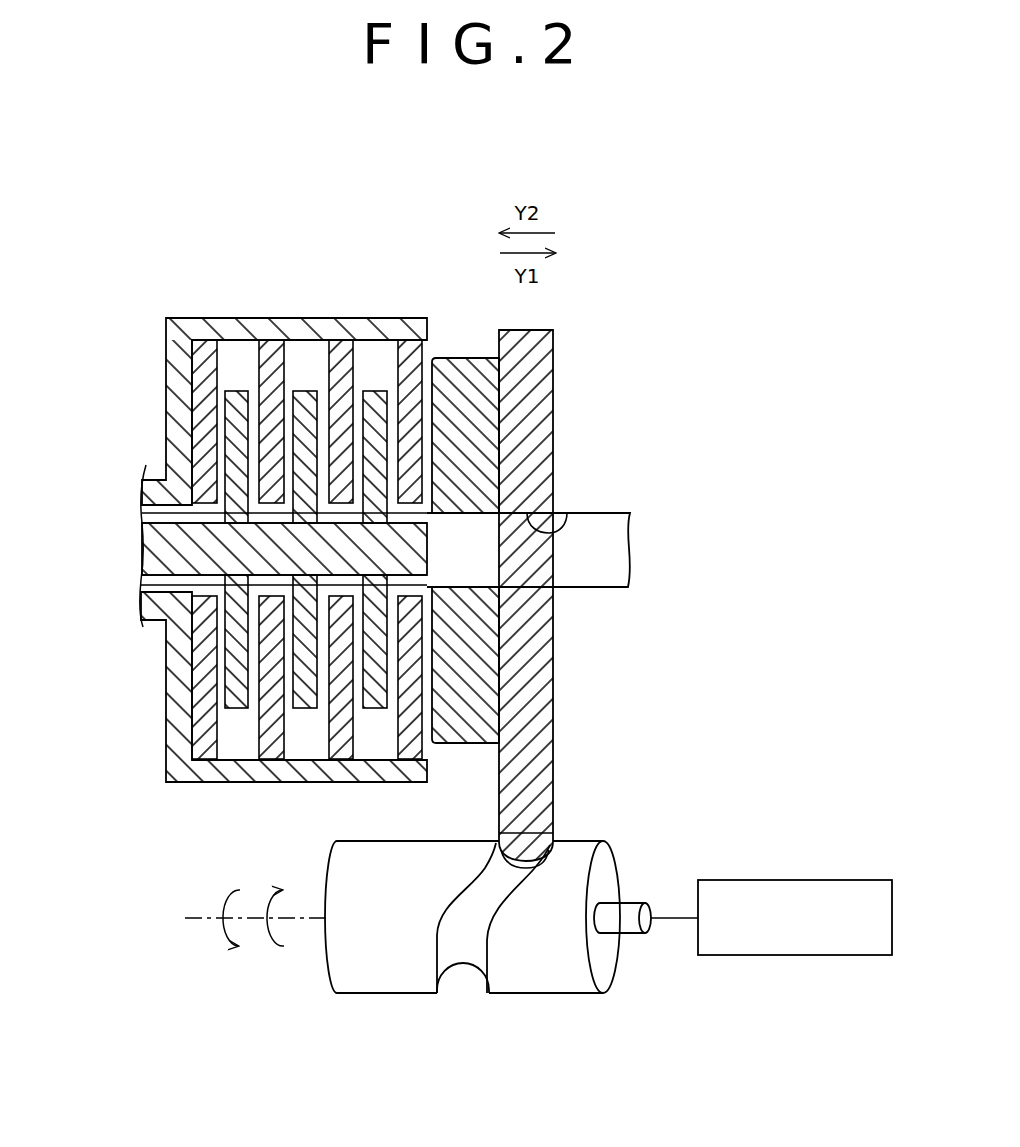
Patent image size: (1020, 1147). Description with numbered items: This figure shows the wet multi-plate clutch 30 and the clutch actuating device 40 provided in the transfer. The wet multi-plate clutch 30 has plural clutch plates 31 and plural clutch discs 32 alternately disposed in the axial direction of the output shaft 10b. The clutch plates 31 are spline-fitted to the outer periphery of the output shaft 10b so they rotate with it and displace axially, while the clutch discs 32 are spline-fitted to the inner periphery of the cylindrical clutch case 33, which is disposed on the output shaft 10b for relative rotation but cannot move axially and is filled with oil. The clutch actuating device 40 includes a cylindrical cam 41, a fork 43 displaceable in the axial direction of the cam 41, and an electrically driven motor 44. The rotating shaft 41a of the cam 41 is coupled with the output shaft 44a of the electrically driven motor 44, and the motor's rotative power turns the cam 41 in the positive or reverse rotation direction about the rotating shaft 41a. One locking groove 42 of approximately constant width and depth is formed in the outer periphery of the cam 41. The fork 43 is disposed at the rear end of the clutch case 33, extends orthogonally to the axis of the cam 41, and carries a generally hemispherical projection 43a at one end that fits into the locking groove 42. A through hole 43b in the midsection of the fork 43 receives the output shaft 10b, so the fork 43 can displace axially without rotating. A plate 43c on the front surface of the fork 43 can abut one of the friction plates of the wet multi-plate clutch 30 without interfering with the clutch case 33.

The wet multi-plate clutch 30 is at (178, 232).
The clutch plates 31 is at (375, 708).
The clutch discs 32 is at (413, 345).
The clutch case 33 is at (164, 733).
The output shaft 10b is at (158, 548).
The clutch actuating device 40 is at (724, 994).
The cam 41 is at (349, 996).
The rotating shaft 41a is at (631, 923).
The locking groove 42 is at (476, 970).
The fork 43 is at (555, 347).
The projection 43a is at (545, 862).
The through hole 43b is at (560, 513).
The plate 43c is at (455, 748).
The electrically driven motor 44 is at (782, 880).
The output shaft 44a is at (678, 917).